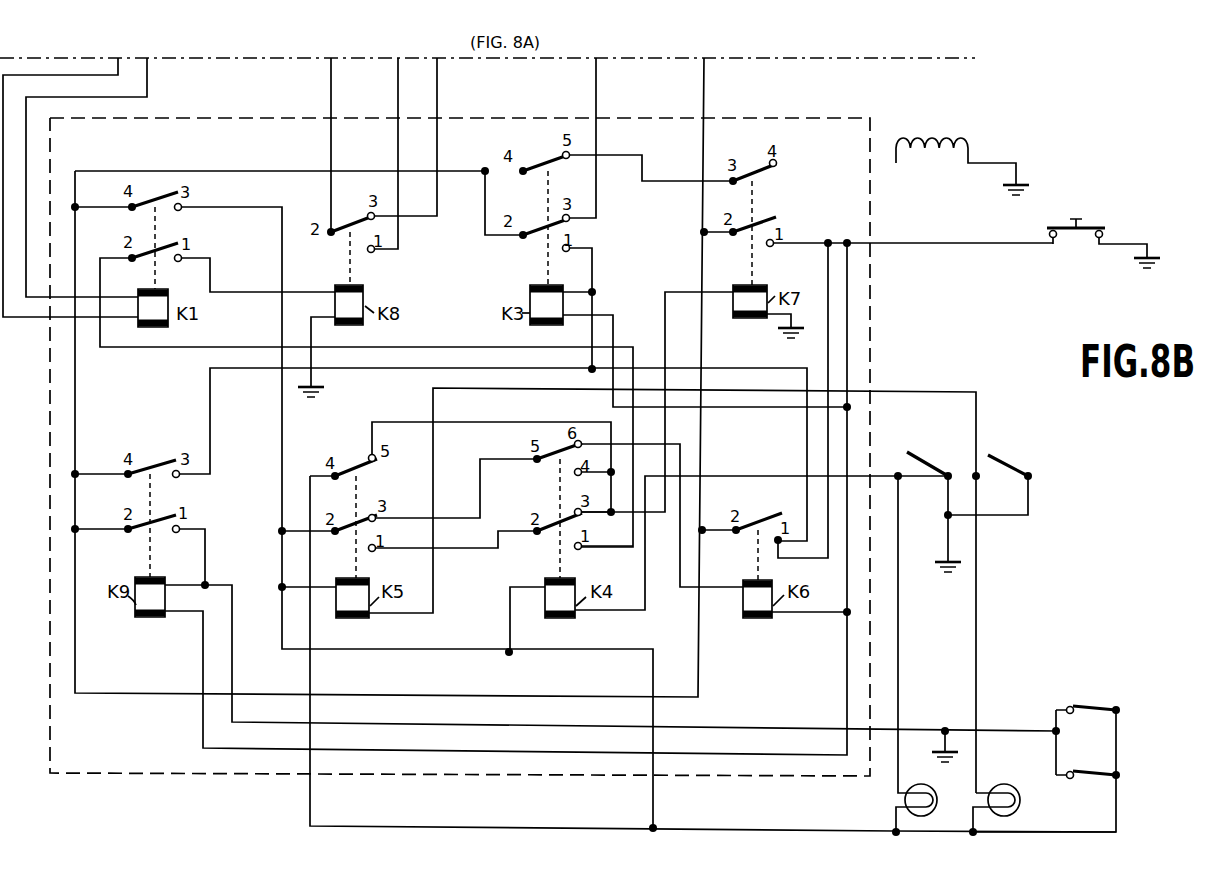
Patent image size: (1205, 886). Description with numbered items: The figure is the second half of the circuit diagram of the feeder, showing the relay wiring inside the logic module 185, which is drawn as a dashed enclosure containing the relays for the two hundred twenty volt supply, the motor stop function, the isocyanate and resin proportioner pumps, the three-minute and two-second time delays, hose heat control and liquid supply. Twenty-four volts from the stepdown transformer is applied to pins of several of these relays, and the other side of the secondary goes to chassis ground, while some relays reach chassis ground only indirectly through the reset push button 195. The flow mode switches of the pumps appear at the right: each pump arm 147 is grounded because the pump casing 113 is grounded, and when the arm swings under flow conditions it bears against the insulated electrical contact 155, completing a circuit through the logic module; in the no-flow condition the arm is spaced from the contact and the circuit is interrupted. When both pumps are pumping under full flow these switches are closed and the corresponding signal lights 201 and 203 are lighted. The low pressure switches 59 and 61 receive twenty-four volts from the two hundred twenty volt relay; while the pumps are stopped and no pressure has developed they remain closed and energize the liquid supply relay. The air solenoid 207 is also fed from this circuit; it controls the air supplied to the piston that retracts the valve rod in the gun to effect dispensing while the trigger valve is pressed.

The air solenoid 207 is at (914, 147).
The reset push button 195 is at (1081, 225).
The logic module 185 is at (882, 316).
The electrical contact 155 is at (897, 474).
The arm 147 is at (927, 460).
The casing 113 is at (934, 574).
The low pressure switch 59 is at (1086, 709).
The low pressure switch 61 is at (1083, 774).
The signal light 201 is at (938, 802).
The signal light 203 is at (1021, 802).